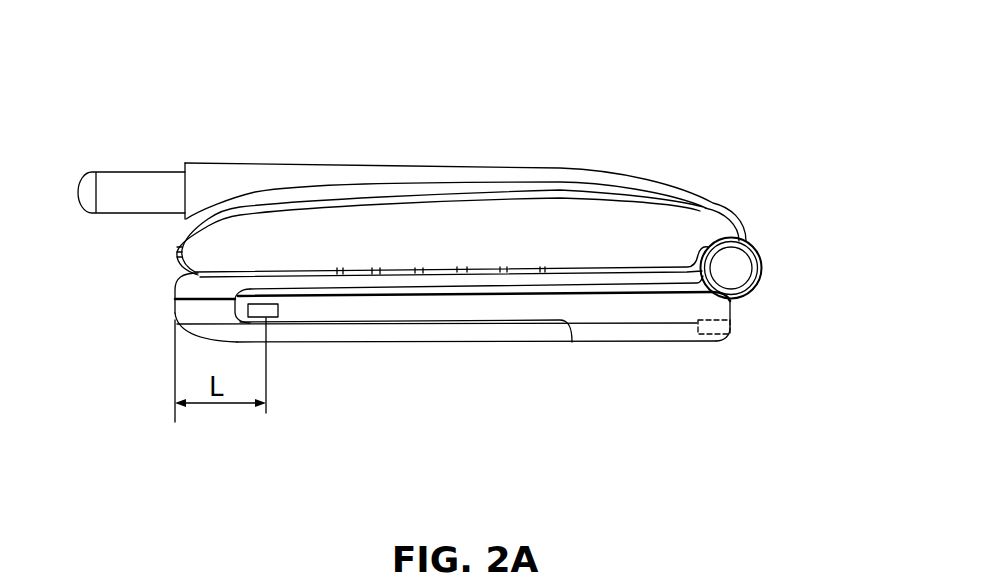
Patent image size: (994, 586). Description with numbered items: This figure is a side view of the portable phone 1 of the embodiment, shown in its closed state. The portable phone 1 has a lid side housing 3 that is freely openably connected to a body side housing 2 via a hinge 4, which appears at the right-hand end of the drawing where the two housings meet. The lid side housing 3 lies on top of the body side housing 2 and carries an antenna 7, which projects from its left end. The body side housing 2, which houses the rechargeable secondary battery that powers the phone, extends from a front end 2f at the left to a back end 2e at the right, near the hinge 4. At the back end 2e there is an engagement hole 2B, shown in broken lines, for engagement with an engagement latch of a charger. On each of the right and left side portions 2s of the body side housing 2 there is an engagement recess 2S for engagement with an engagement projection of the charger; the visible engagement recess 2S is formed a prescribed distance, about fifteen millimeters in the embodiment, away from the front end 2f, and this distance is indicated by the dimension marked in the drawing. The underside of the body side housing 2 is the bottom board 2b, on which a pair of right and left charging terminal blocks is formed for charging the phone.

The portable phone 1 is at (649, 152).
The body side housing 2 is at (510, 350).
The front end of body side housing 2f is at (173, 297).
The back end of body side housing 2e is at (731, 312).
The bottom board 2b is at (617, 342).
The side portion of body side housing 2s is at (400, 313).
The engagement recess 2S is at (275, 312).
The engagement hole 2B is at (730, 332).
The lid side housing 3 is at (441, 158).
The hinge 4 is at (771, 254).
The antenna 7 is at (146, 180).